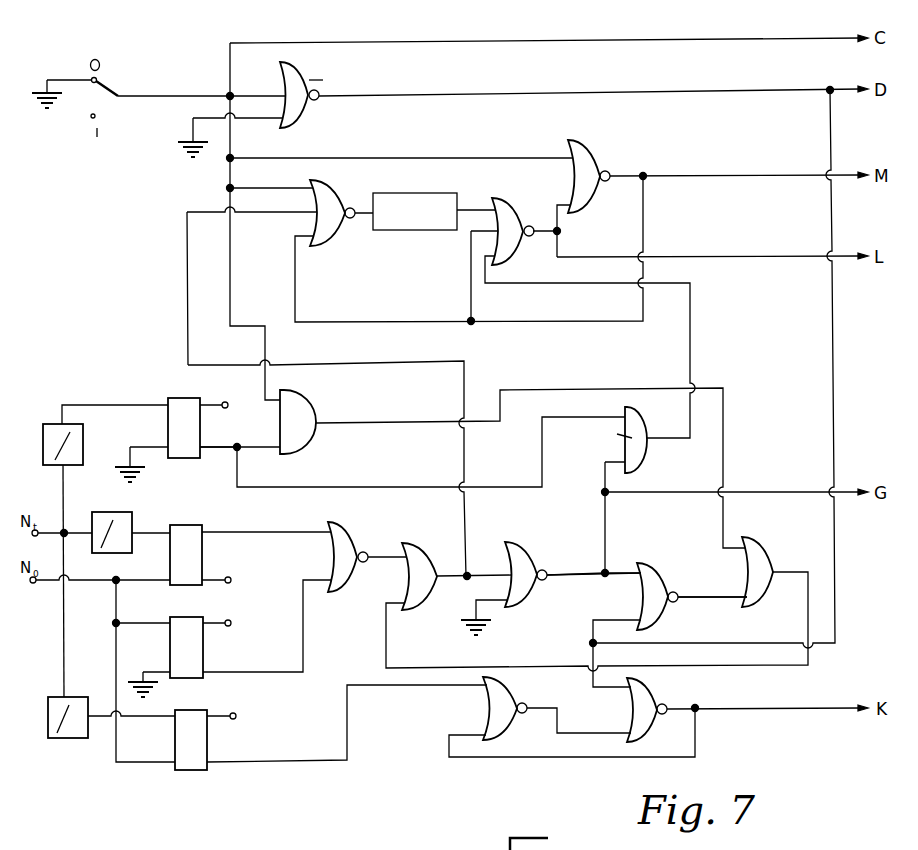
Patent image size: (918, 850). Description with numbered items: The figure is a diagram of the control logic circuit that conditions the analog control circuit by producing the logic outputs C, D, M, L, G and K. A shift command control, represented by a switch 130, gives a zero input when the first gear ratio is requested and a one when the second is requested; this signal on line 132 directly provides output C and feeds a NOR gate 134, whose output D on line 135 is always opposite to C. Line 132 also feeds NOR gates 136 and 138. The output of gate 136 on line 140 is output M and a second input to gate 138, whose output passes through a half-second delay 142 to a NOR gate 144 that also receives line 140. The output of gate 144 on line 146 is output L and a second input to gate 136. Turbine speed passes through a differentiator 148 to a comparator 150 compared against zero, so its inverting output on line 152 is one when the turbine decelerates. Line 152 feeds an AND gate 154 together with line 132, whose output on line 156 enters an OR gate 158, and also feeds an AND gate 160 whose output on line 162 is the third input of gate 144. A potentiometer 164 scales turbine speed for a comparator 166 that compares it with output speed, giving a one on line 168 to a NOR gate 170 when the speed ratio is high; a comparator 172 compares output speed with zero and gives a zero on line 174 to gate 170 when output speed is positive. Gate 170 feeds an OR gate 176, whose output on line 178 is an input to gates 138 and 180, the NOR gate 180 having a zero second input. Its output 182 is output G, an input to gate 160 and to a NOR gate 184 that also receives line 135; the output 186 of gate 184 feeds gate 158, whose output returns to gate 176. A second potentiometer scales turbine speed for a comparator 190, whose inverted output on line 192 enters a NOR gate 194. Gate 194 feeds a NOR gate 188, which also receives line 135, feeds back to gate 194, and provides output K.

The switch 130 is at (113, 84).
The line 132 is at (178, 96).
The NOR gate 134 is at (300, 72).
The line 135 is at (556, 92).
The NOR gate 136 is at (590, 145).
The NOR gate 138 is at (328, 248).
The line 140 is at (745, 174).
The delay 142 is at (410, 230).
The NOR gate 144 is at (516, 198).
The line 146 is at (732, 256).
The differentiator 148 is at (53, 424).
The comparator 150 is at (176, 398).
The line 152 is at (222, 450).
The AND gate 154 is at (298, 415).
The line 156 is at (373, 423).
The OR gate 158 is at (768, 560).
The AND gate 160 is at (636, 440).
The line 162 is at (690, 320).
The potentiometer 164 is at (97, 512).
The comparator 166 is at (205, 555).
The line 168 is at (255, 528).
The NOR gate 170 is at (345, 540).
The comparator 172 is at (200, 645).
The line 174 is at (303, 635).
The OR gate 176 is at (423, 578).
The line 178 is at (468, 522).
The NOR gate 180 is at (530, 545).
The output 182 is at (590, 578).
The NOR gate 184 is at (660, 575).
The output 186 is at (690, 598).
The NOR gate 188 is at (650, 690).
The comparator 190 is at (205, 738).
The line 192 is at (315, 762).
The NOR gate 194 is at (508, 707).